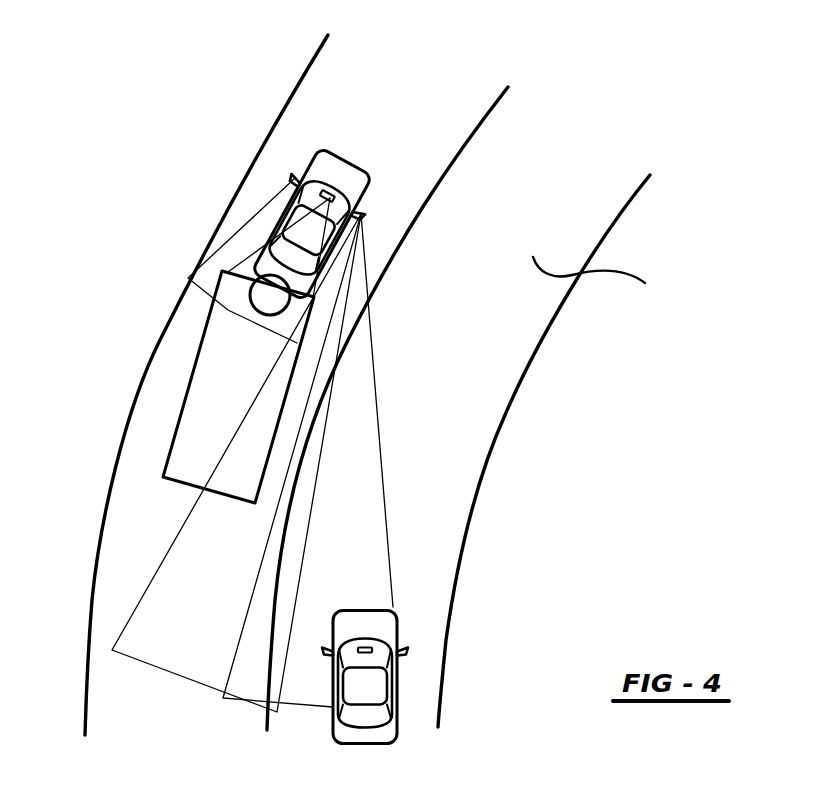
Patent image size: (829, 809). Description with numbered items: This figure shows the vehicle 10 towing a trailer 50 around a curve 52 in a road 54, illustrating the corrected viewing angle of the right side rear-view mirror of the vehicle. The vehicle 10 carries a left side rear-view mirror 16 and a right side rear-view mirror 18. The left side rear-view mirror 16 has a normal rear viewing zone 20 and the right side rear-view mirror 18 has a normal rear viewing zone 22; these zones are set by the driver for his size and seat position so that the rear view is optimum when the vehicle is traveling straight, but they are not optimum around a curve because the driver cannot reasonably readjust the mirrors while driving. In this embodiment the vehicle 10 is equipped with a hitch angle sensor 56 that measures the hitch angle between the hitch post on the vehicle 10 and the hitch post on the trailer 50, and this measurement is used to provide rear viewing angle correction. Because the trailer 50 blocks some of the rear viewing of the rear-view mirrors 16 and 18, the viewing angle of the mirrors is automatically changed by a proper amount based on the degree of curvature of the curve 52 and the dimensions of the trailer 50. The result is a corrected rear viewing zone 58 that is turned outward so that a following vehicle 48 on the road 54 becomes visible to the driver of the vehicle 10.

The vehicle 10 is at (357, 162).
The left side rear-view mirror 16 is at (295, 173).
The right side rear-view mirror 18 is at (380, 213).
The normal rear viewing zone 20 is at (203, 262).
The normal rear viewing zone 22 is at (160, 667).
The vehicle 48 is at (398, 632).
The trailer 50 is at (187, 388).
The curve 52 is at (512, 393).
The road 54 is at (602, 282).
The hitch angle sensor 56 is at (260, 278).
The corrected rear viewing zone 58 is at (375, 457).